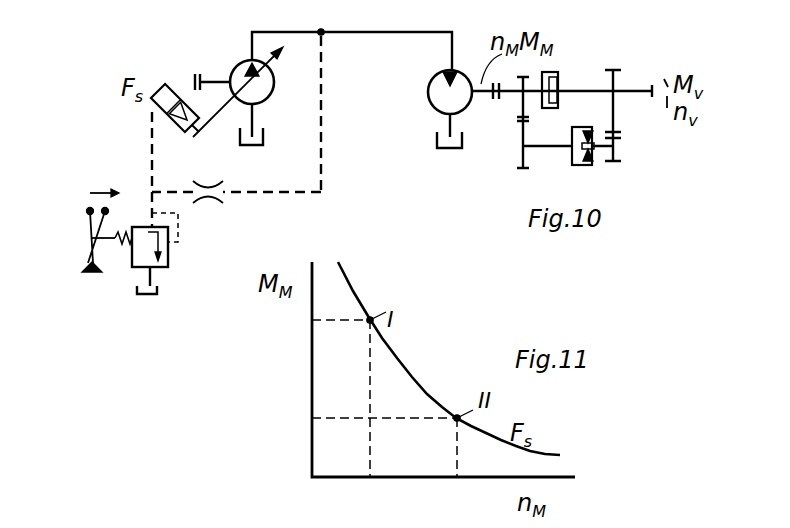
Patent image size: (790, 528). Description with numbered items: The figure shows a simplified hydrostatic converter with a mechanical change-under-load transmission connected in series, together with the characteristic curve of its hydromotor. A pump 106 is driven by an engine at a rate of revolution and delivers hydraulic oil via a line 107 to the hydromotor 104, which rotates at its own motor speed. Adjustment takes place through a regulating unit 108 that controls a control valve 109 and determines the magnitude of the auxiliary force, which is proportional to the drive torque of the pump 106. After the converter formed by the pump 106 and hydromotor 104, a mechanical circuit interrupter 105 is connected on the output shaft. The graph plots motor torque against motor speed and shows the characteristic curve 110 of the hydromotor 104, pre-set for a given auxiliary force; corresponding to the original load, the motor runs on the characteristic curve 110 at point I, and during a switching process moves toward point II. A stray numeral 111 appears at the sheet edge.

In FIG. 10, the hydromotor 104 is at (435, 110).
In FIG. 10, the mechanical circuit interrupter 105 is at (575, 86).
In FIG. 10, the pump 106 is at (267, 102).
In FIG. 10, the line 107 is at (387, 35).
In FIG. 10, the regulating unit 108 is at (88, 229).
In FIG. 10, the control valve 109 is at (133, 267).
In FIG. 11, the characteristic curve 110 is at (415, 378).
In FIG. 11, the reference numeral 111 is at (146, 518).